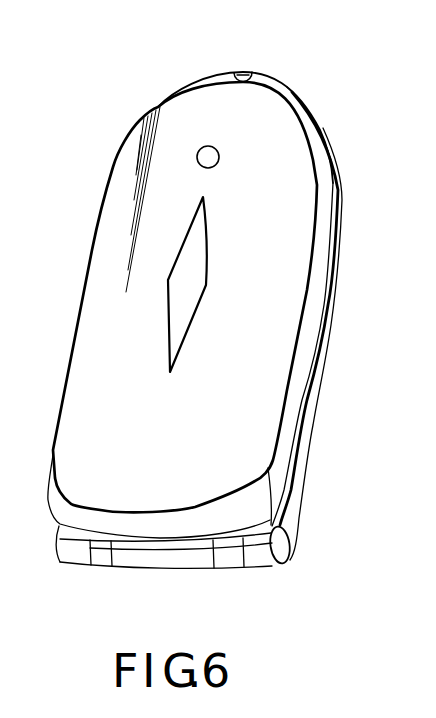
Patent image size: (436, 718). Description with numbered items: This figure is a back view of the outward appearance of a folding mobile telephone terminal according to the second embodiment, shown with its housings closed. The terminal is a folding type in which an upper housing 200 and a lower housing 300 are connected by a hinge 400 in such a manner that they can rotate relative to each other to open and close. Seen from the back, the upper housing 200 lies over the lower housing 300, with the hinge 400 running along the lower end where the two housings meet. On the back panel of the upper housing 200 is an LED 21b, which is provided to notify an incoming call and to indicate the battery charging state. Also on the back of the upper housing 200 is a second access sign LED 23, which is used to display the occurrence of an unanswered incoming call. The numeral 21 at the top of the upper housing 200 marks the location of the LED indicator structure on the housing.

The upper housing 200 is at (78, 315).
The notch 21 is at (243, 70).
The second access sign LED 23 is at (215, 156).
The LED 21b is at (190, 287).
The lower housing 300 is at (315, 410).
The hinge 400 is at (186, 556).